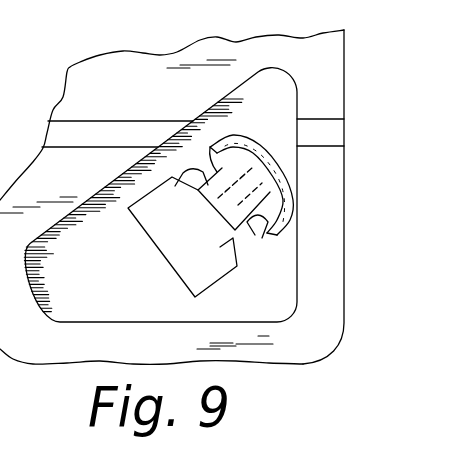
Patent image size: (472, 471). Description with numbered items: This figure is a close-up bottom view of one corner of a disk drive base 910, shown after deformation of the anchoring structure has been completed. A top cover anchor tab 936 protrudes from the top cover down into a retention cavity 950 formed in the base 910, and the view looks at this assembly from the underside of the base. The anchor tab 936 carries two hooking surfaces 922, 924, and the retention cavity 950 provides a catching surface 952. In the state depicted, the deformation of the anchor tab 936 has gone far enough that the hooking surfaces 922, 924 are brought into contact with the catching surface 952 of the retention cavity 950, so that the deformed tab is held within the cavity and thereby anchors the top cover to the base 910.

The disk drive base 910 is at (100, 72).
The hooking surface 922 is at (200, 160).
The hooking surface 924 is at (253, 220).
The top cover anchor tab 936 is at (251, 190).
The retention cavity 950 is at (232, 240).
The catching surface 952 is at (284, 193).